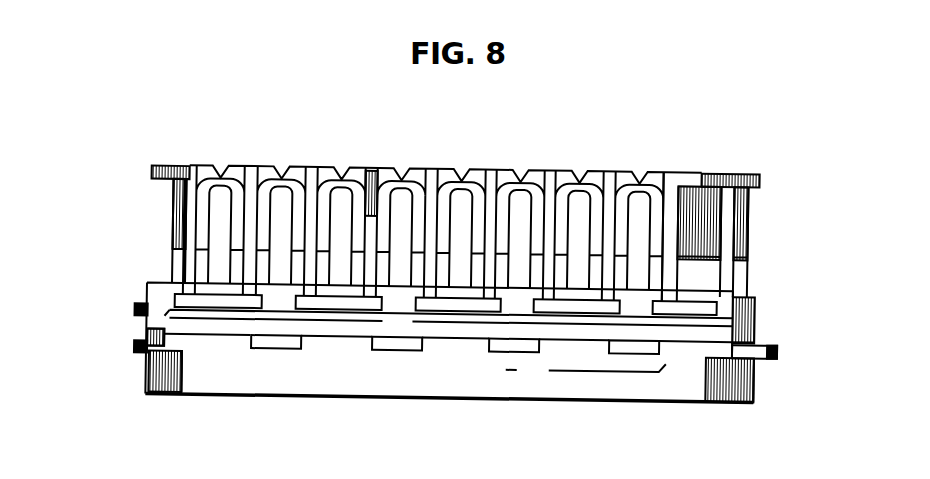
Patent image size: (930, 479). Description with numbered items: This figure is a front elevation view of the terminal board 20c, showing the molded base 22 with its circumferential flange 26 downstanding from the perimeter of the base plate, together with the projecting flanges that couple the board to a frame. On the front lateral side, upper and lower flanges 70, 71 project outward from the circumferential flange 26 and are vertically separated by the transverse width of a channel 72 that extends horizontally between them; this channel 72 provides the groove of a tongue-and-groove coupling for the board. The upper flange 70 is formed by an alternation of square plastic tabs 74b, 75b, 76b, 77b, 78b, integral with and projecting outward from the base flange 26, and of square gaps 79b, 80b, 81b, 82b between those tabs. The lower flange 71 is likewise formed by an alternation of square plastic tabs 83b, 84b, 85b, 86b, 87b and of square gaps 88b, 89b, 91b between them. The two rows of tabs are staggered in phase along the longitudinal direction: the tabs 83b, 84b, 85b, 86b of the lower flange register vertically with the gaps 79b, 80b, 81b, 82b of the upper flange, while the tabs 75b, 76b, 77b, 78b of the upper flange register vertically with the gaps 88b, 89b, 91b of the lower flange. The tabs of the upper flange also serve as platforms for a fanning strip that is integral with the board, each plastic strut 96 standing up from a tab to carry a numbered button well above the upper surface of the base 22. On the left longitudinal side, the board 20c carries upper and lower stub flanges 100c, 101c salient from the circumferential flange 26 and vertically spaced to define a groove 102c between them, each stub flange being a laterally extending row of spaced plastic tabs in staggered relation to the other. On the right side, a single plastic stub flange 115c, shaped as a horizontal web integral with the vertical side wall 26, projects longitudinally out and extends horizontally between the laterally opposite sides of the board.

The terminal board 20c is at (834, 451).
The base 22 is at (750, 292).
The circumferential flange 26 is at (757, 390).
The upper flange 70 is at (448, 325).
The lower flange 71 is at (586, 371).
The channel 72 is at (742, 337).
The square plastic tab 74b is at (737, 311).
The square plastic tab 75b is at (578, 307).
The square plastic tab 76b is at (453, 307).
The square plastic tab 77b is at (330, 307).
The square plastic tab 78b is at (207, 302).
The square gap 79b is at (637, 305).
The square gap 80b is at (518, 307).
The square gap 81b is at (398, 303).
The square gap 82b is at (281, 305).
The square plastic tab 83b is at (633, 350).
The square plastic tab 84b is at (502, 347).
The square plastic tab 85b is at (392, 342).
The square plastic tab 86b is at (273, 337).
The square plastic tab 87b is at (165, 337).
The square gap 88b is at (582, 347).
The square gap 89b is at (457, 343).
The square gap 91b is at (217, 337).
The plastic strut 96 is at (330, 340).
The upper stub flange 100c is at (138, 314).
The lower stub flange 101c is at (138, 354).
The groove 102c is at (142, 337).
The stub flange 115c is at (780, 353).